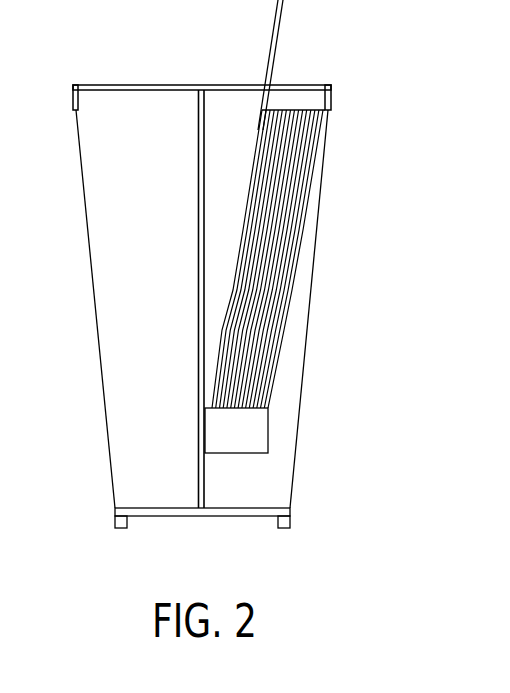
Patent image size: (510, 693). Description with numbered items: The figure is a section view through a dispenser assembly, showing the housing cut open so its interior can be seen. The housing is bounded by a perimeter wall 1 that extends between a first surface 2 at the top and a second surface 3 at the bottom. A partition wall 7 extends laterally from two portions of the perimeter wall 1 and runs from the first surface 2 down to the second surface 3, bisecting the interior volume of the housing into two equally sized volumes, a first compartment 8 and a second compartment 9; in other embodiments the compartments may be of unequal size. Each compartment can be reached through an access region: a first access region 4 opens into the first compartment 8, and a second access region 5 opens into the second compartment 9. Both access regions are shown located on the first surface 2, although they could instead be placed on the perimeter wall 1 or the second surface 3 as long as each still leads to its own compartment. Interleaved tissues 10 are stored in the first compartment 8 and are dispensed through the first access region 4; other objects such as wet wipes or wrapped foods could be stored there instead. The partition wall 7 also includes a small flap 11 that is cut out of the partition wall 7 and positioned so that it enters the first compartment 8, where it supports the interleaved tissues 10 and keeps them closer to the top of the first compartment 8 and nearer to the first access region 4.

The perimeter wall 1 is at (313, 247).
The first surface 2 is at (220, 84).
The second surface 3 is at (253, 517).
The first access region 4 is at (308, 97).
The second access region 5 is at (89, 95).
The partition wall 7 is at (200, 365).
The first compartment 8 is at (230, 190).
The second compartment 9 is at (103, 210).
The interleaved tissues 10 is at (253, 320).
The flap 11 is at (268, 430).